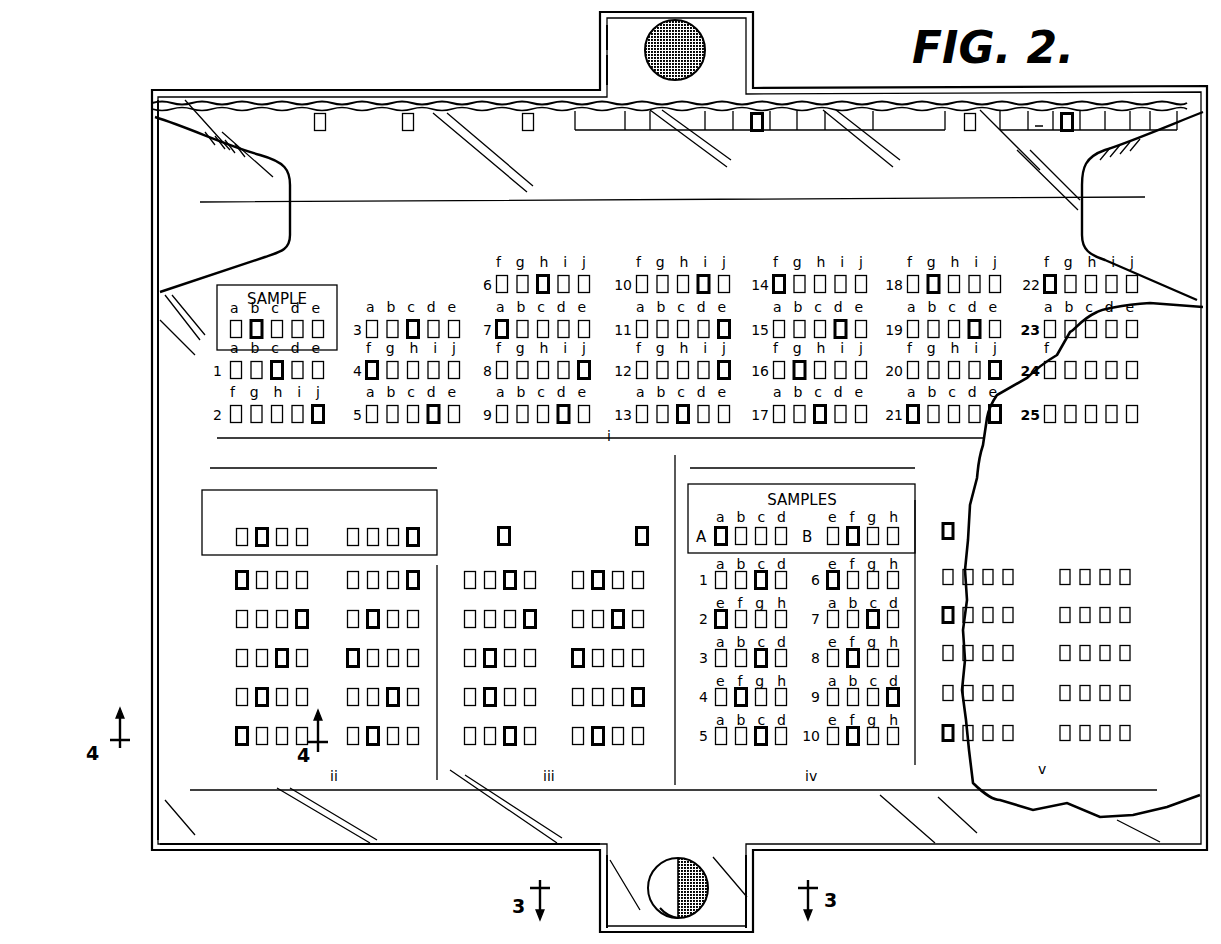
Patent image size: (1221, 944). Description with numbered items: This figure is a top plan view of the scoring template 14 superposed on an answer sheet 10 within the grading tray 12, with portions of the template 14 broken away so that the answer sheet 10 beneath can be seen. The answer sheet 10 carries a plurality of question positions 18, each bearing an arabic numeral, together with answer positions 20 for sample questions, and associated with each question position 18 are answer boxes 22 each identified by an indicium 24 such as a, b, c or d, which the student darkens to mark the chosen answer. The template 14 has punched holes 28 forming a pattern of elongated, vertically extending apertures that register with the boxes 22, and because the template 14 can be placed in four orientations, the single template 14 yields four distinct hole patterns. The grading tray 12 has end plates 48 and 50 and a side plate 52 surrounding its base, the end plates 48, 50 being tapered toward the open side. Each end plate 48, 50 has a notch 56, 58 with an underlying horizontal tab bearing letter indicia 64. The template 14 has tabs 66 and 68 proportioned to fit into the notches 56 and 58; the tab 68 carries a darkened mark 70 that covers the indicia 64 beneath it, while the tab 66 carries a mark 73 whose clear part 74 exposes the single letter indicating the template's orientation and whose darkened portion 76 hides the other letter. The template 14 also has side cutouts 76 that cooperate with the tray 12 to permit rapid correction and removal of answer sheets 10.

The answer sheet 10 is at (1084, 500).
The grading tray 12 is at (464, 84).
The scoring template 14 is at (586, 494).
The question positions 18 is at (295, 650).
The sample answer positions 20 is at (319, 502).
The answer boxes 22 is at (242, 577).
The indicium 24 is at (311, 558).
The punched holes 28 is at (524, 128).
The end plate 48 is at (358, 852).
The end plate 50 is at (383, 90).
The side plate 52 is at (153, 328).
The notch 56 is at (601, 893).
The notch 58 is at (601, 60).
The indicia 64 is at (661, 876).
The tab 66 is at (738, 913).
The tab 68 is at (600, 34).
The darkened mark 70 is at (705, 48).
The half-shaded portion of window 73 is at (698, 860).
The clear part 74 is at (658, 908).
The darkened portion 76 is at (292, 225).